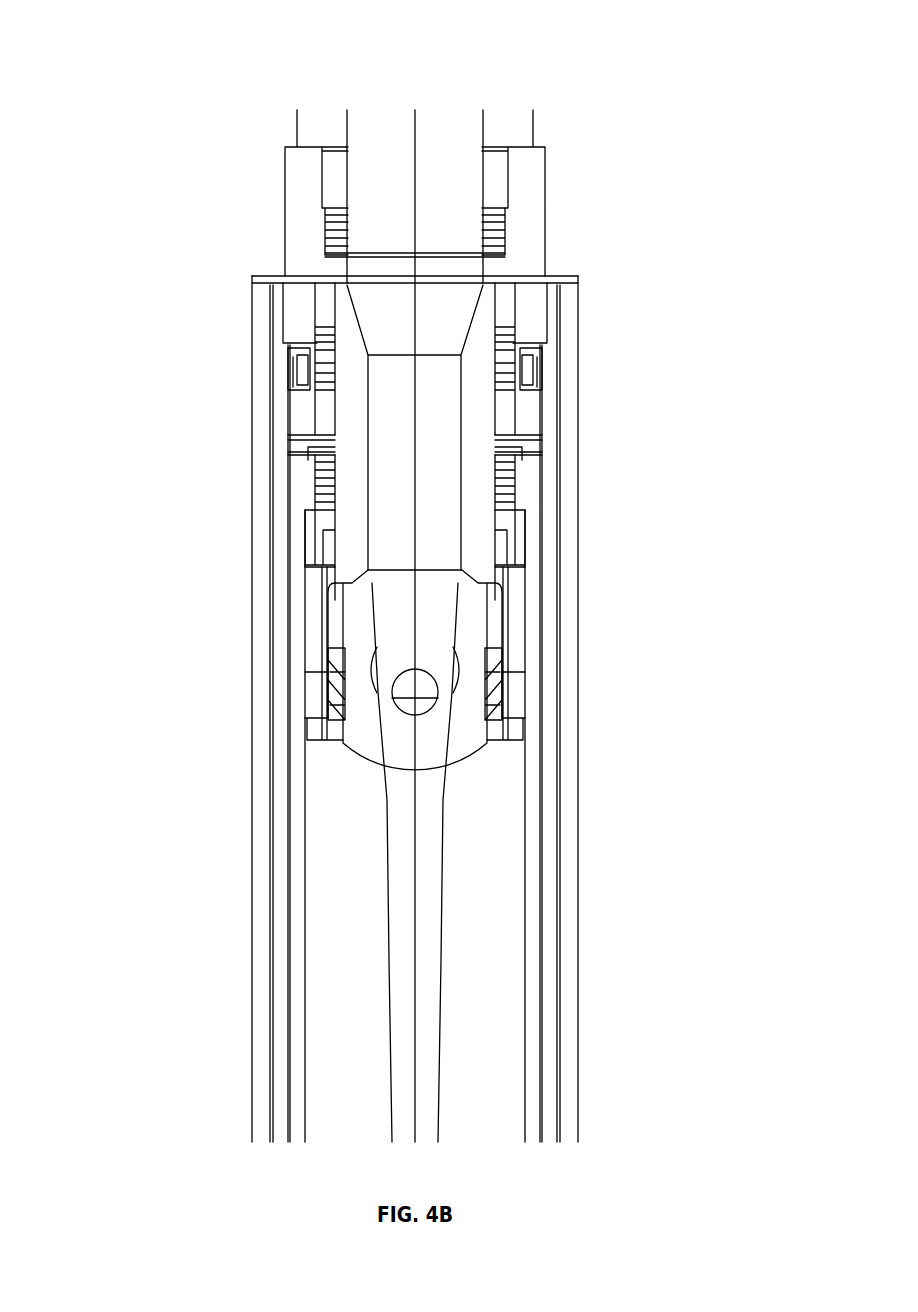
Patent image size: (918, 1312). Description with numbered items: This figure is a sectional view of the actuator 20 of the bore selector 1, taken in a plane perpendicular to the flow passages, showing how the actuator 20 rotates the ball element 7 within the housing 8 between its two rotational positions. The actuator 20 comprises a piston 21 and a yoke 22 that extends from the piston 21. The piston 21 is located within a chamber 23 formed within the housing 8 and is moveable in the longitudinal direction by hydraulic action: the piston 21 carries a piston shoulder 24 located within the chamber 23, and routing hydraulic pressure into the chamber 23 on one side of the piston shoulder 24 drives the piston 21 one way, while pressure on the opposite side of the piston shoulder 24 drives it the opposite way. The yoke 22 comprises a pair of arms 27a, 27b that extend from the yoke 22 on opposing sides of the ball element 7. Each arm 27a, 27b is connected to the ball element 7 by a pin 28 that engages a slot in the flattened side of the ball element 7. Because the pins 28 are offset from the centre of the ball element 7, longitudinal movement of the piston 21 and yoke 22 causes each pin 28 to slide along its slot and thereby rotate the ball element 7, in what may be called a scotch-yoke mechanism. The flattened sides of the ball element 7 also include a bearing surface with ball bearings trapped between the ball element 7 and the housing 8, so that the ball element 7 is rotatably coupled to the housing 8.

The bore selector 1 is at (100, 146).
The ball element 7 is at (340, 772).
The housing 8 is at (258, 944).
The actuator 20 is at (656, 490).
The piston 21 is at (322, 478).
The yoke 22 is at (318, 585).
The chamber 23 is at (303, 412).
The piston shoulder 24 is at (309, 444).
The arm 27a is at (312, 643).
The arm 27b is at (513, 625).
The pin 28 is at (330, 685).